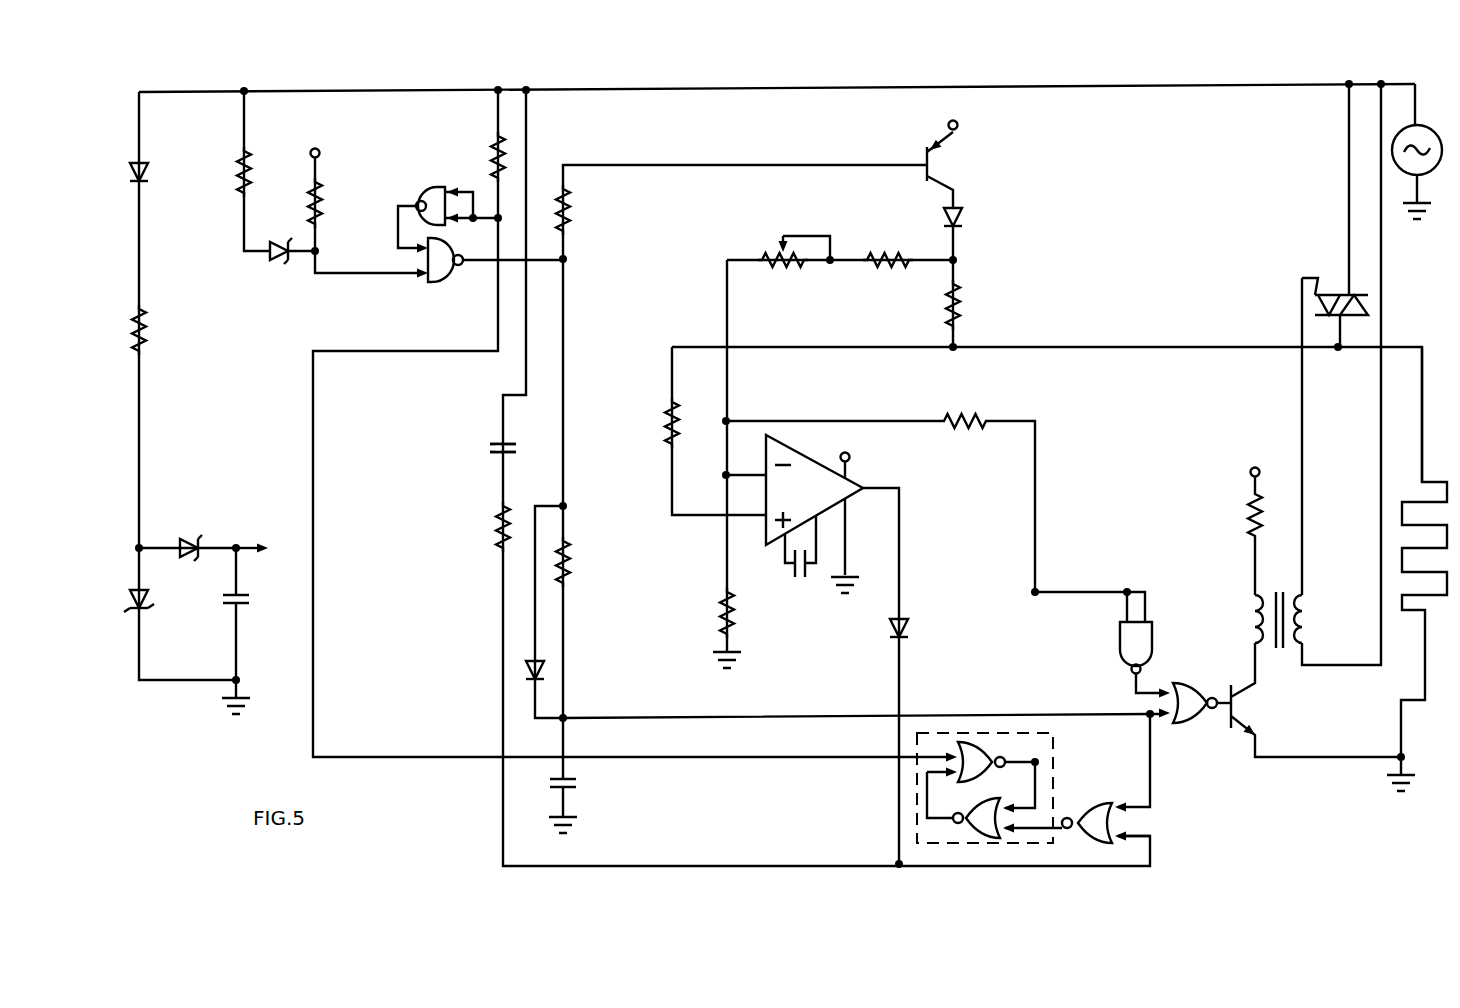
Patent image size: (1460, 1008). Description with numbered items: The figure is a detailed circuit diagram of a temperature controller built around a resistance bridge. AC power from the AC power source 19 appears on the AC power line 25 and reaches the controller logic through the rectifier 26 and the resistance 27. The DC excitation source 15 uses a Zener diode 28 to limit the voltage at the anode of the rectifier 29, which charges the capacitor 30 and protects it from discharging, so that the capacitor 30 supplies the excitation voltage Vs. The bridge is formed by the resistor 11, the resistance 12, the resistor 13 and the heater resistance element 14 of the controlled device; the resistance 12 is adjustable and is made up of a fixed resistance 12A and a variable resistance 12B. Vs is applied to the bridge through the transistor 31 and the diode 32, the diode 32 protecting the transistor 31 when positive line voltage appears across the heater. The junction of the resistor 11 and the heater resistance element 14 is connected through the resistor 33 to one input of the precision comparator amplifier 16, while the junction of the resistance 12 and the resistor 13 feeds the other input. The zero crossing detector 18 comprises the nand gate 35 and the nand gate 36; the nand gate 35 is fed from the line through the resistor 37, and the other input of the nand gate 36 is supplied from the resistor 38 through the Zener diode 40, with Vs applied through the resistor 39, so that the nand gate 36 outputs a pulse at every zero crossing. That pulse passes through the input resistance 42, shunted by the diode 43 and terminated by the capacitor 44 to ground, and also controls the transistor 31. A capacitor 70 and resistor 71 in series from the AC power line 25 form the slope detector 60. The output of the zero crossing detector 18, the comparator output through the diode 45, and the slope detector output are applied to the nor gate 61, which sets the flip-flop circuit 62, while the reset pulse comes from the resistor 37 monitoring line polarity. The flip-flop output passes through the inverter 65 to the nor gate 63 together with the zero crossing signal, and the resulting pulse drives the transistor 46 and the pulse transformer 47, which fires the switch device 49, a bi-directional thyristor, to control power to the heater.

The resistor 11 is at (964, 304).
The resistance 12 is at (838, 427).
The fixed resistance 12A is at (886, 240).
The variable resistance 12B is at (768, 258).
The resistor 13 is at (738, 622).
The heater resistance element 14 is at (1408, 498).
The DC excitation source 15 is at (112, 592).
The precision comparator amplifier 16 is at (818, 462).
The zero crossing detector 18 is at (460, 243).
The AC power source 19 is at (1390, 148).
The AC power line 25 is at (712, 86).
The rectifier 26 is at (128, 181).
The resistance 27 is at (150, 335).
The Zener diode 28 is at (152, 600).
The rectifier 29 is at (192, 540).
The capacitor 30 is at (244, 605).
The transistor 31 is at (950, 162).
The diode 32 is at (965, 224).
The resistor 33 is at (664, 418).
The nand gate 35 is at (433, 192).
The nand gate 36 is at (446, 288).
The resistor 37 is at (494, 148).
The resistor 38 is at (238, 170).
The resistor 39 is at (322, 210).
The Zener diode 40 is at (270, 262).
The input resistance 42 is at (576, 560).
The diode 43 is at (552, 672).
The capacitor 44 is at (584, 786).
The diode 45 is at (908, 630).
The transistor 46 is at (1258, 710).
The pulse transformer 47 is at (1312, 634).
The switch device 49 is at (1336, 292).
The slope detector 60 is at (773, 479).
The nor gate 61 is at (1080, 810).
The flip-flop circuit 62 is at (981, 731).
The nor gate 63 is at (1196, 692).
The inverter 65 is at (1118, 640).
The capacitor 70 is at (490, 450).
The resistor 71 is at (494, 530).